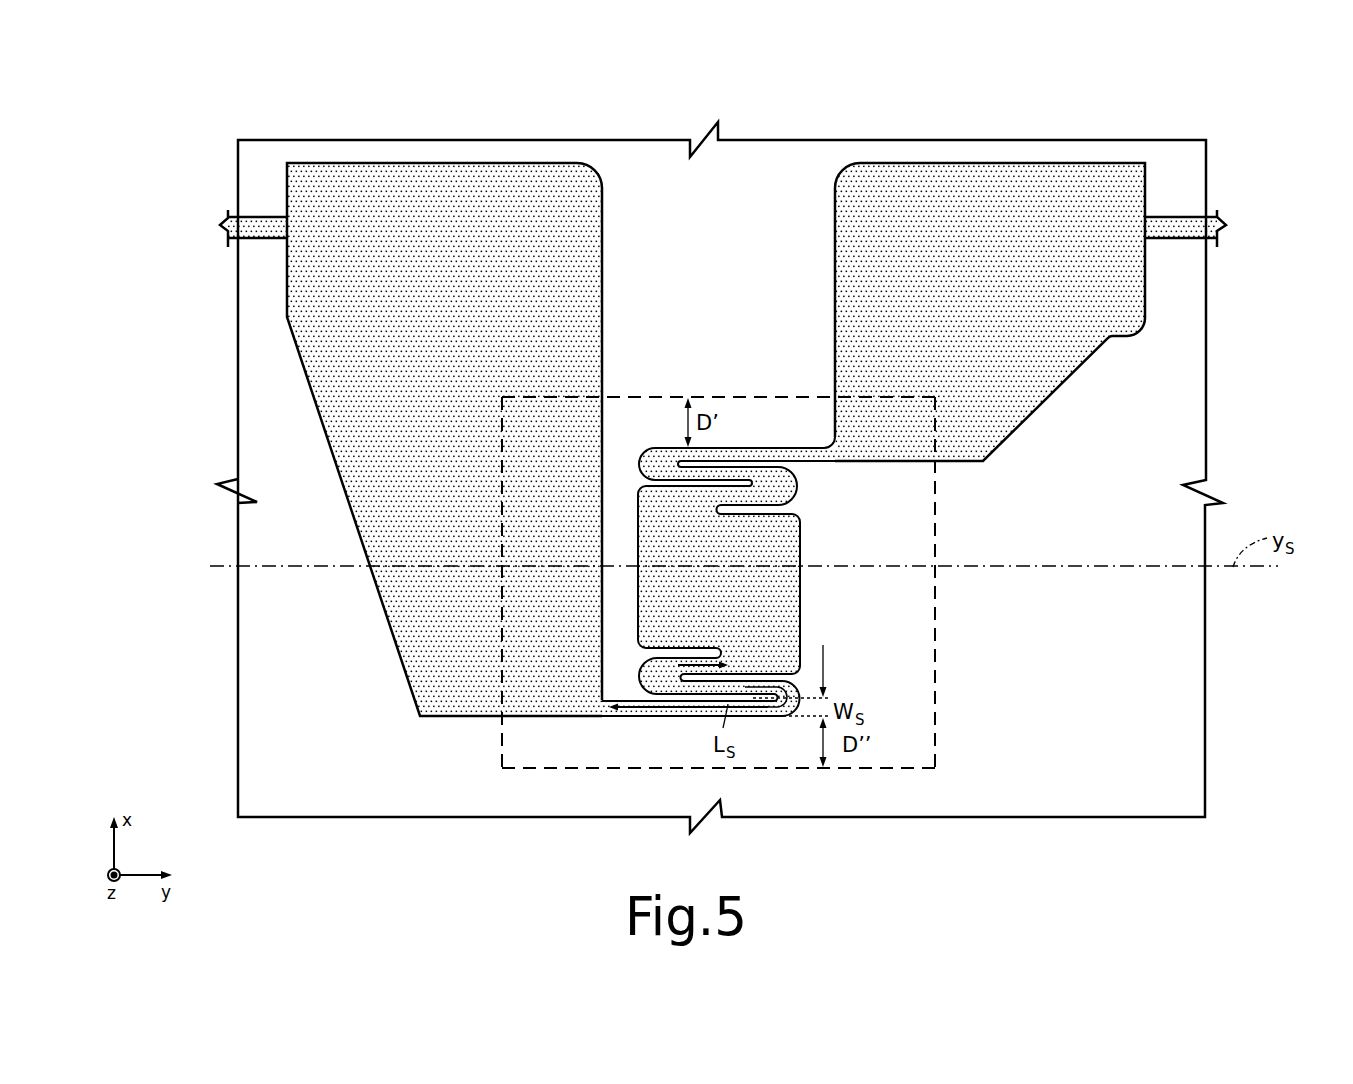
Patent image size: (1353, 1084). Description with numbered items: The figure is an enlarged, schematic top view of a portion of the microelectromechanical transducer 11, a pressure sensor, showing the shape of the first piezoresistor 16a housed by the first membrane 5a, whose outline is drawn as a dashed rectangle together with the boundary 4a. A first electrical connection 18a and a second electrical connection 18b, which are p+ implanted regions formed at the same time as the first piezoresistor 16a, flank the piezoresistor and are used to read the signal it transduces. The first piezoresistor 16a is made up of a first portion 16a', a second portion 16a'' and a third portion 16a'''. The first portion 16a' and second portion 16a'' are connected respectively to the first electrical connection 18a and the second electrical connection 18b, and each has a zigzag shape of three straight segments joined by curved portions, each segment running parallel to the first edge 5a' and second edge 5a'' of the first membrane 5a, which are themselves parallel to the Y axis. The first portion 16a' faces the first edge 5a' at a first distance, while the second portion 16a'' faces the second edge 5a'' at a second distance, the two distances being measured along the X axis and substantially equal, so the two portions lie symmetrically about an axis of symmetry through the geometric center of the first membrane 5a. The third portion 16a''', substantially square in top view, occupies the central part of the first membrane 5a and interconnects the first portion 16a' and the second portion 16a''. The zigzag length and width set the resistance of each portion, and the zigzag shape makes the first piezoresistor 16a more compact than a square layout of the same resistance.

The microelectromechanical transducer 11 is at (254, 94).
The first electrical connection 18a is at (362, 530).
The second electrical connection 18b is at (1058, 177).
The first piezoresistor 16a is at (750, 570).
The first portion of the first piezoresistor 16a' is at (731, 425).
The second portion of the first piezoresistor 16a'' is at (697, 730).
The third portion of the first piezoresistor 16a''' is at (771, 580).
The first membrane 5a is at (745, 610).
The first edge of the first membrane 5a' is at (718, 372).
The second edge of the first membrane 5a'' is at (718, 820).
The cavity boundary 4a is at (898, 771).